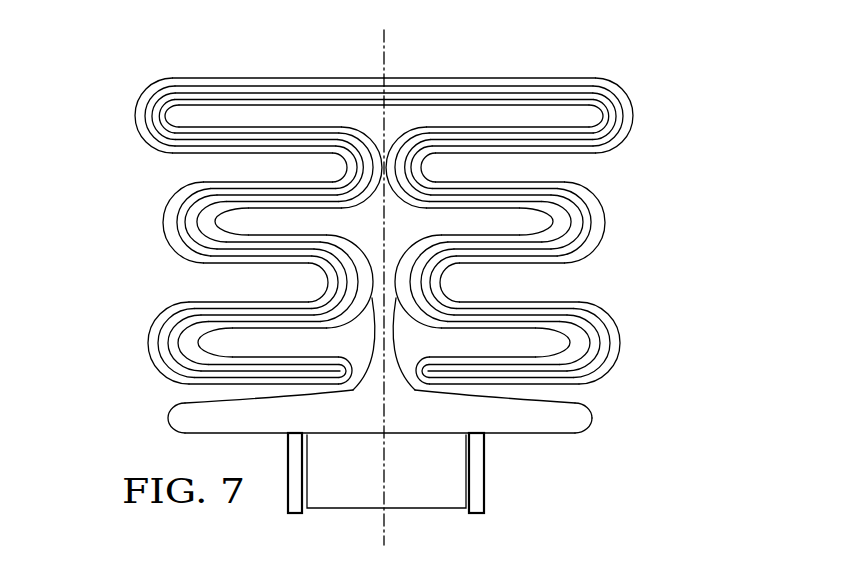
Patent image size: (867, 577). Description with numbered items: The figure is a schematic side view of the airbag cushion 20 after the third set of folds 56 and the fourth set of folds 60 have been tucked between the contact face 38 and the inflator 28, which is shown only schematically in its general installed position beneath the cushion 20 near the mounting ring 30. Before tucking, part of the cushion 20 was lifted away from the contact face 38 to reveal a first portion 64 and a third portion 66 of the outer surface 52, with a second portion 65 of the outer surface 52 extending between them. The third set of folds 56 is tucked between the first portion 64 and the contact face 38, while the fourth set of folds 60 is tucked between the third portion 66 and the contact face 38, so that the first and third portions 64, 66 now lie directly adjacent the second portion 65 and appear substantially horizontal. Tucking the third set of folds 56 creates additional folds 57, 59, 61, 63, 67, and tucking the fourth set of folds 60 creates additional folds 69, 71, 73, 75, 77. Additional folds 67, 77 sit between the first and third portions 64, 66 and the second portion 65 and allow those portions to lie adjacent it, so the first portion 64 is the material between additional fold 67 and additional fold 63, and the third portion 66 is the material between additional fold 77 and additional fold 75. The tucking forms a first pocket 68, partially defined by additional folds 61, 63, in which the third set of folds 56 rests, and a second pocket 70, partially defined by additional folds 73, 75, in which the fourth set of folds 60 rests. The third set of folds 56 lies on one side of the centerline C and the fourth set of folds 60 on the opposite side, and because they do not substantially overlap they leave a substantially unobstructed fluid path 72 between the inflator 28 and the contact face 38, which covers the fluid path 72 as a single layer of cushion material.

The cushion 20 is at (381, 472).
The inflator 28 is at (423, 470).
The mounting ring 30 is at (488, 468).
The contact face 38 is at (455, 74).
The outer surface 52 is at (542, 73).
The third set of folds 56 is at (554, 199).
The additional fold 57 is at (632, 117).
The additional fold 59 is at (420, 168).
The fourth set of folds 60 is at (312, 202).
The additional fold 61 is at (386, 178).
The additional fold 63 is at (425, 389).
The first portion 64 is at (560, 398).
The second portion 65 is at (527, 437).
The third portion 66 is at (167, 424).
The additional fold 67 is at (593, 420).
The first pocket 68 is at (535, 393).
The additional fold 69 is at (135, 117).
The second pocket 70 is at (190, 400).
The additional fold 71 is at (347, 168).
The fluid path 72 is at (383, 150).
The additional fold 73 is at (382, 178).
The additional fold 75 is at (345, 389).
The additional fold 77 is at (167, 417).
The centerline C is at (384, 53).